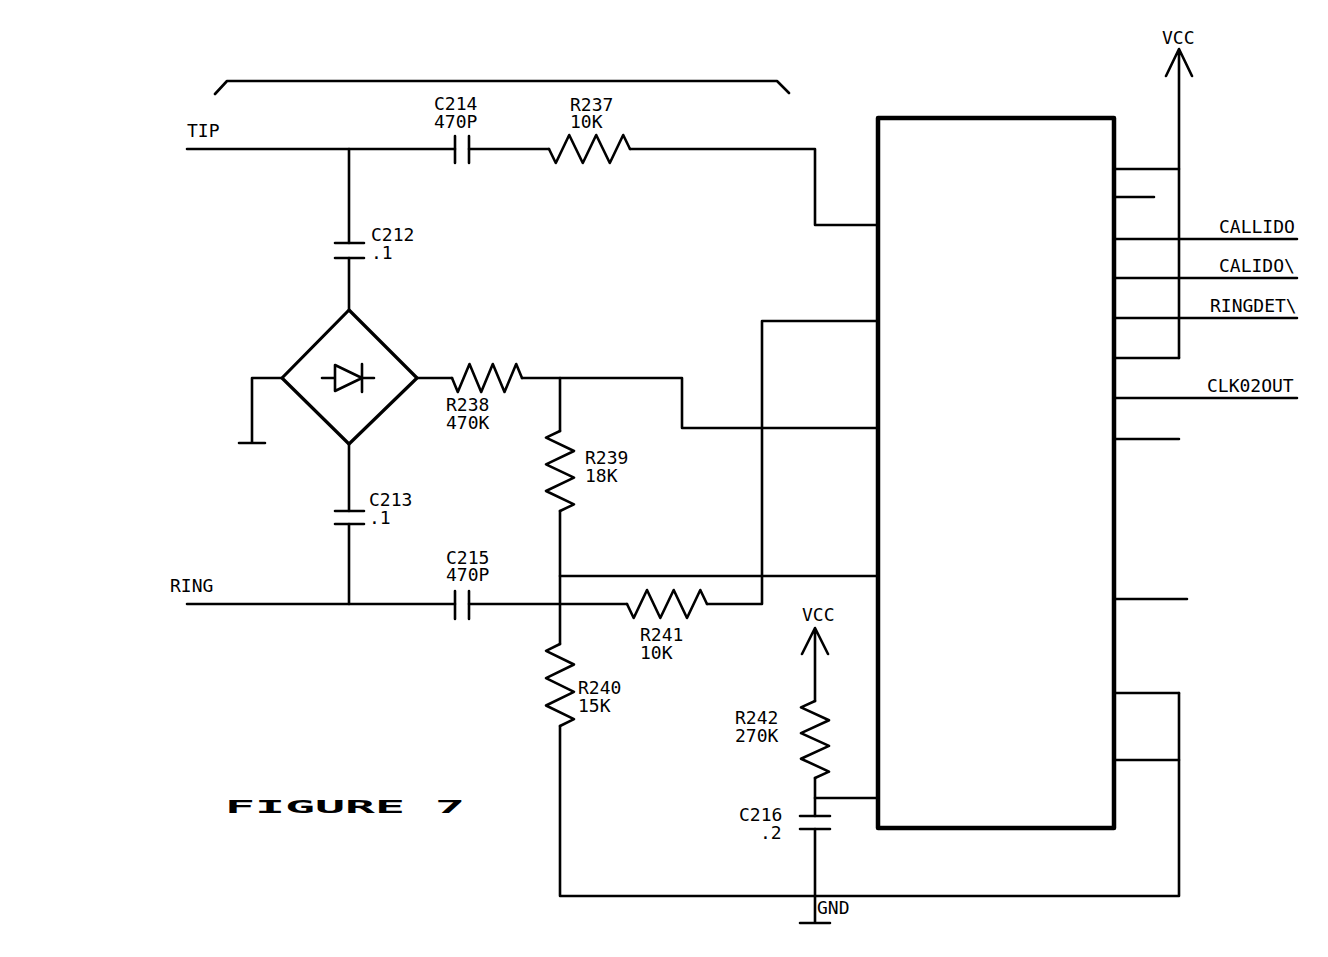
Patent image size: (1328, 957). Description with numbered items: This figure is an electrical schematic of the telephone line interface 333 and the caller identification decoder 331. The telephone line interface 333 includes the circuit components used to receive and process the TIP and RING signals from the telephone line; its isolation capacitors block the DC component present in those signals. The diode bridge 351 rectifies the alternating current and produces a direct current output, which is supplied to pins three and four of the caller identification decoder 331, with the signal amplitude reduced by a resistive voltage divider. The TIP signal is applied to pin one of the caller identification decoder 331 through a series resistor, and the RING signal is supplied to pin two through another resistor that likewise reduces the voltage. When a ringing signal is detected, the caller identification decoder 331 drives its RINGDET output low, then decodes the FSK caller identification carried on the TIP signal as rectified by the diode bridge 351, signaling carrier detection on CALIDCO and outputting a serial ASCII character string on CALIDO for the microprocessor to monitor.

The telephone line interface 333 is at (494, 80).
The caller identification decoder 331 is at (1048, 117).
The diode bridge 351 is at (294, 350).